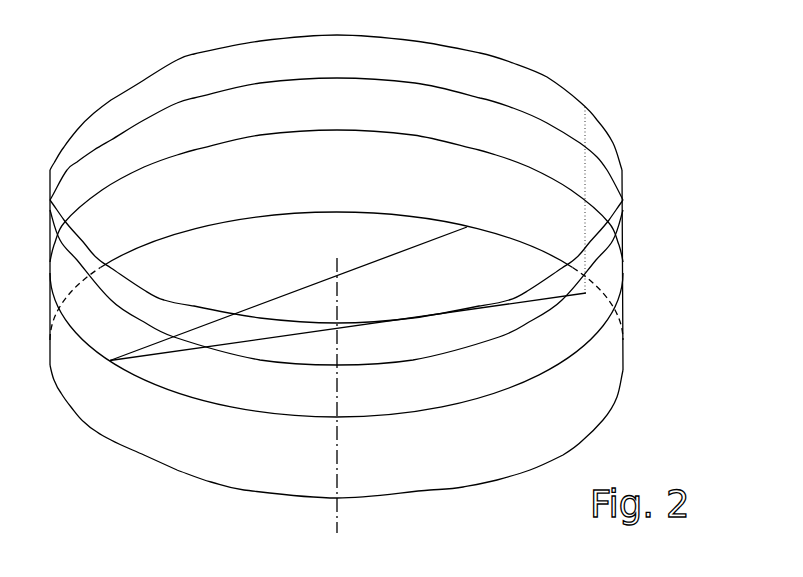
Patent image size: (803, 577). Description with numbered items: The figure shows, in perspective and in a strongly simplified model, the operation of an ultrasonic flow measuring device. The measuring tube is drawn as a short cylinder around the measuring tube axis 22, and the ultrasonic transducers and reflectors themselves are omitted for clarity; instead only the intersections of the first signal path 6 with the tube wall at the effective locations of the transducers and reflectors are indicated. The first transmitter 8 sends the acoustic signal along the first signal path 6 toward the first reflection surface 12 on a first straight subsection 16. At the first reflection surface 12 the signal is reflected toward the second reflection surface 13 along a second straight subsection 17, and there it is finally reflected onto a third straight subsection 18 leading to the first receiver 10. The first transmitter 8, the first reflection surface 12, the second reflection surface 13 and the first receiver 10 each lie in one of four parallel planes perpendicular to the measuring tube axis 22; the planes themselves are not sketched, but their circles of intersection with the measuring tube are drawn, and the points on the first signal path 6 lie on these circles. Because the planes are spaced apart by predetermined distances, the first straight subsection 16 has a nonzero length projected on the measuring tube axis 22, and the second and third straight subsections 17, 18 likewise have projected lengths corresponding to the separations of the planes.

The first signal path 6 is at (363, 262).
The first transmitter 8 is at (467, 230).
The first receiver 10 is at (586, 107).
The first reflection surface 12 is at (124, 360).
The second reflection surface 13 is at (607, 309).
The first straight subsection 16 is at (287, 292).
The second straight subsection 17 is at (544, 297).
The third straight subsection 18 is at (587, 218).
The measuring tube axis 22 is at (337, 521).